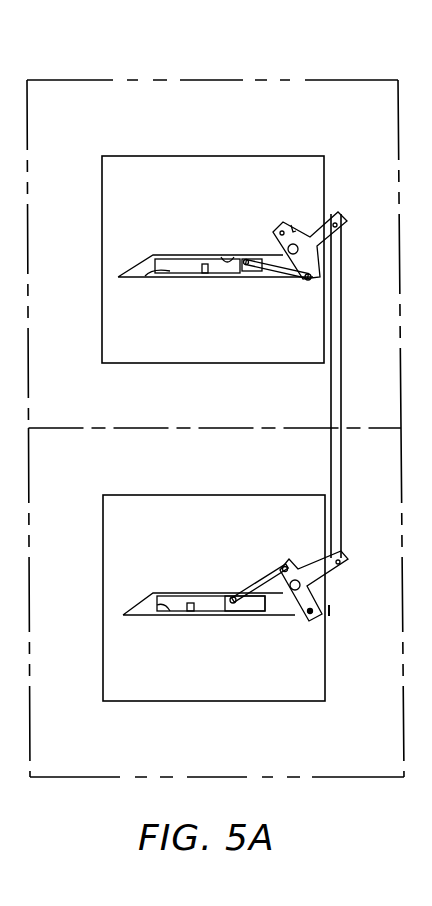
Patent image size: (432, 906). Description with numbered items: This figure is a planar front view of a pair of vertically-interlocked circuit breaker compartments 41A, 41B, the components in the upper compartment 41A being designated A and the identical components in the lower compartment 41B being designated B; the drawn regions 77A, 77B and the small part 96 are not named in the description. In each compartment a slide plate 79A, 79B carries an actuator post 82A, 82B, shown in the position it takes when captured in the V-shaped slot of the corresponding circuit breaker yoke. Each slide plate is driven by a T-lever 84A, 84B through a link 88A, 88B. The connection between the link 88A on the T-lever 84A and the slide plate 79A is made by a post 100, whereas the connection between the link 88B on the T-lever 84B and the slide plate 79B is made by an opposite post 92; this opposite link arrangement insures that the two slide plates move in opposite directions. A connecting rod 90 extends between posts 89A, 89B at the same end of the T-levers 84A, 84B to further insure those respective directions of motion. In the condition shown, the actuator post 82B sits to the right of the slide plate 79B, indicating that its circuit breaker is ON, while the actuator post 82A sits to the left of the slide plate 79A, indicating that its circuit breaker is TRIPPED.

The circuit breaker compartment 41A is at (210, 78).
The circuit breaker compartment 41B is at (225, 778).
The upper tray assembly 77A is at (215, 304).
The lower tray assembly 77B is at (231, 638).
The slide plate 79A is at (127, 278).
The slide plate 79B is at (127, 610).
The actuator post 82A is at (205, 262).
The actuator post 82B is at (190, 602).
The T-lever 84A is at (310, 228).
The T-lever 84B is at (305, 568).
The link 88A is at (275, 280).
The link 88B is at (258, 582).
The post 89A is at (343, 223).
The post 89B is at (345, 558).
The connecting rod 90 is at (337, 390).
The opposite post 92 is at (289, 563).
The stop 96 is at (217, 257).
The post 100 is at (310, 283).